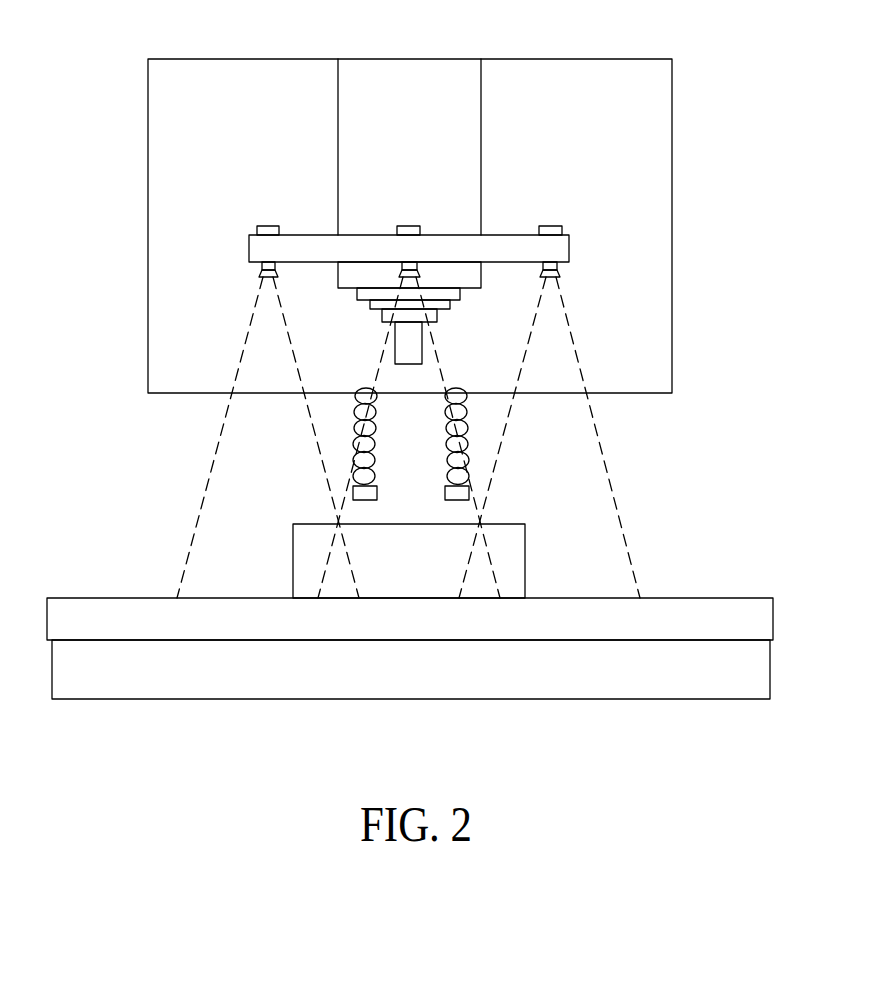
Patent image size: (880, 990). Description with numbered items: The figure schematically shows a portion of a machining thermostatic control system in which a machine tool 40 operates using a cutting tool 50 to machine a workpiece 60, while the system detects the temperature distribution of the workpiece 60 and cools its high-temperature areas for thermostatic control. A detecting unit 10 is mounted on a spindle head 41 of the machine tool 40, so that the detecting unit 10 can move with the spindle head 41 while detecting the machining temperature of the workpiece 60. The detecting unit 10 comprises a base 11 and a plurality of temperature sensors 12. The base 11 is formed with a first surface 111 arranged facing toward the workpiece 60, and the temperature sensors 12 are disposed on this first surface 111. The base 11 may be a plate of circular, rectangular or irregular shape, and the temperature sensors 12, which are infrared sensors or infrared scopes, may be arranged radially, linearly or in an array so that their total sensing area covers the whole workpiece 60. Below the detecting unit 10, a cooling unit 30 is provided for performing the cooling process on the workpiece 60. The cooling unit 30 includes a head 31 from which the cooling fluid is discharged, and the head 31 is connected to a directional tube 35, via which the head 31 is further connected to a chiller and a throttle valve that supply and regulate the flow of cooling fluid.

The detecting unit 10 is at (365, 256).
The base 11 is at (249, 252).
The temperature sensors 12 is at (384, 288).
The first surface 111 is at (512, 265).
The cooling unit 30 is at (365, 446).
The head 31 is at (352, 496).
The directional tube 35 is at (355, 420).
The machine tool 40 is at (196, 59).
The spindle head 41 is at (350, 127).
The cutting tool 50 is at (398, 345).
The workpiece 60 is at (293, 560).